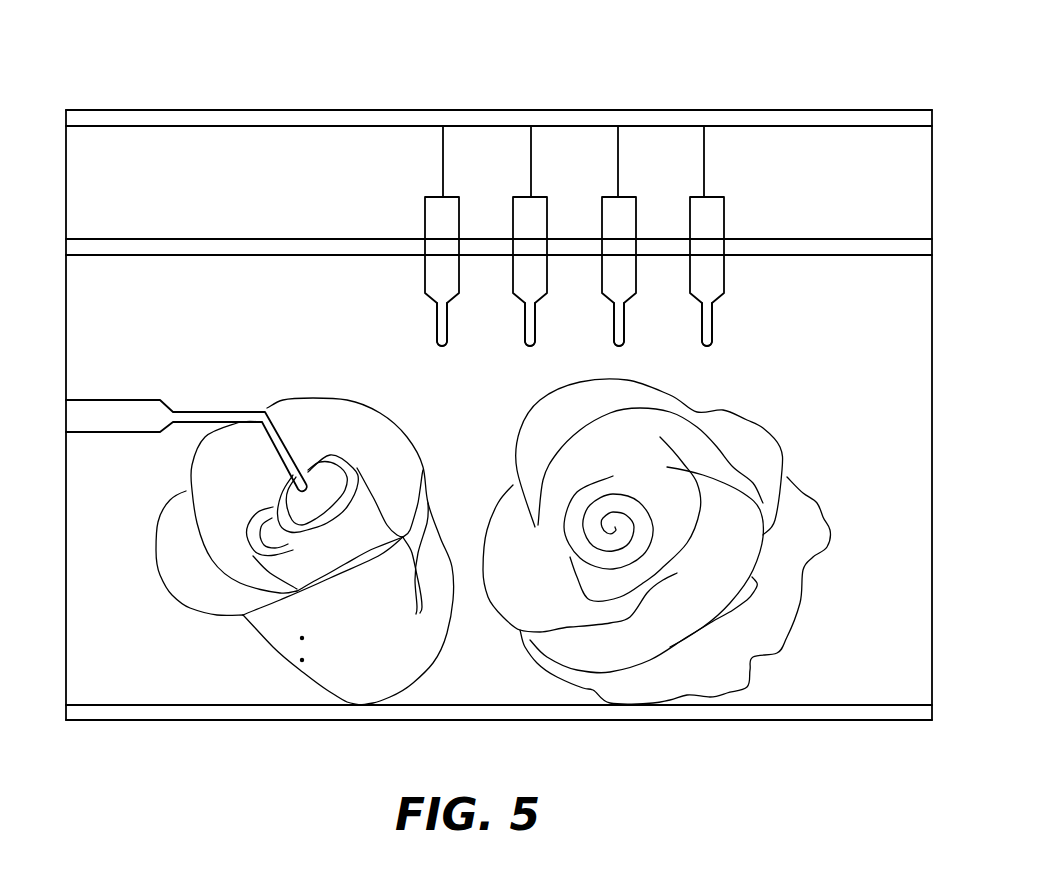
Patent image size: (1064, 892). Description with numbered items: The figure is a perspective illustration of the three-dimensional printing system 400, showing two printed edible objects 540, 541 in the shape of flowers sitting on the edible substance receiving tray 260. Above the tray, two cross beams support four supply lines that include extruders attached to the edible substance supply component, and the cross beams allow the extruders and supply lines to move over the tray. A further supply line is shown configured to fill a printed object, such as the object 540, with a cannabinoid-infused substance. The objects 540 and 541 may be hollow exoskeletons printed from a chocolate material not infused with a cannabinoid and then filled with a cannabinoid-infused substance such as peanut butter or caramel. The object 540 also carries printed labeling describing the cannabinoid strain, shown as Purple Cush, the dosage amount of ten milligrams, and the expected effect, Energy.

The 3D printing system 400 is at (852, 54).
The edible substance receiving tray 260 is at (932, 711).
The 3D-printed edible object 540 is at (158, 573).
The 3D-printed edible object 541 is at (750, 423).